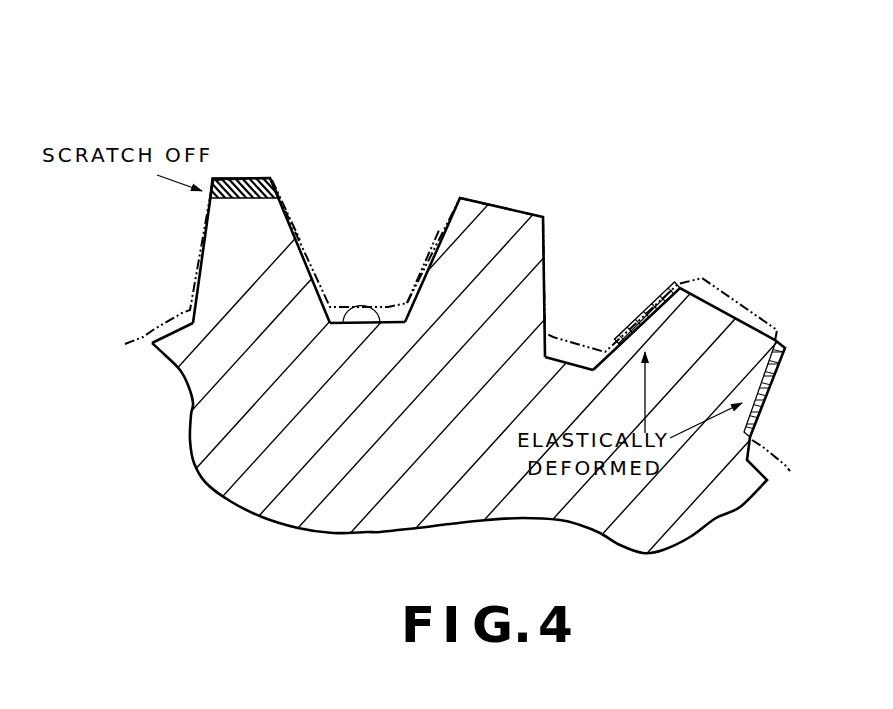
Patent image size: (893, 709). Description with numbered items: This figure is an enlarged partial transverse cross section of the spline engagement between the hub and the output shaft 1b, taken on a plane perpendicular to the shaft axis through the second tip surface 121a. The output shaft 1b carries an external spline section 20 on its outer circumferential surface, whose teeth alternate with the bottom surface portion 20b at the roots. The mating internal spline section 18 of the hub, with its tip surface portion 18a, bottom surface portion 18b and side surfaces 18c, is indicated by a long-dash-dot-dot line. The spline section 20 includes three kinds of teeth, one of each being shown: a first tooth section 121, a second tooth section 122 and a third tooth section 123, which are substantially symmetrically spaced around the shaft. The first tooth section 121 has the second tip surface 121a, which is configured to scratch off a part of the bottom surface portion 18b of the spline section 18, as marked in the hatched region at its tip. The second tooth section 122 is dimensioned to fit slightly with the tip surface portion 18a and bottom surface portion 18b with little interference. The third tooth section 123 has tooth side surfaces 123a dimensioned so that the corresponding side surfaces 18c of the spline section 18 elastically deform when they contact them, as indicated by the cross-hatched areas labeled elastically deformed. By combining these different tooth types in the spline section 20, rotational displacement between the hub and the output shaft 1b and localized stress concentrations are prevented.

The output shaft 1b is at (746, 531).
The spline section 20 is at (489, 231).
The first tooth section 121 is at (223, 168).
The second tooth section 122 is at (503, 194).
The third tooth section 123 is at (708, 292).
The second tip surface 121a is at (238, 178).
The tooth side surfaces 123a is at (631, 344).
The spline section 18 is at (114, 351).
The tip surface portion 18a is at (391, 305).
The bottom surface portion 18b is at (250, 201).
The side surfaces 18c is at (737, 367).
The bottom surface portion 20b is at (374, 344).